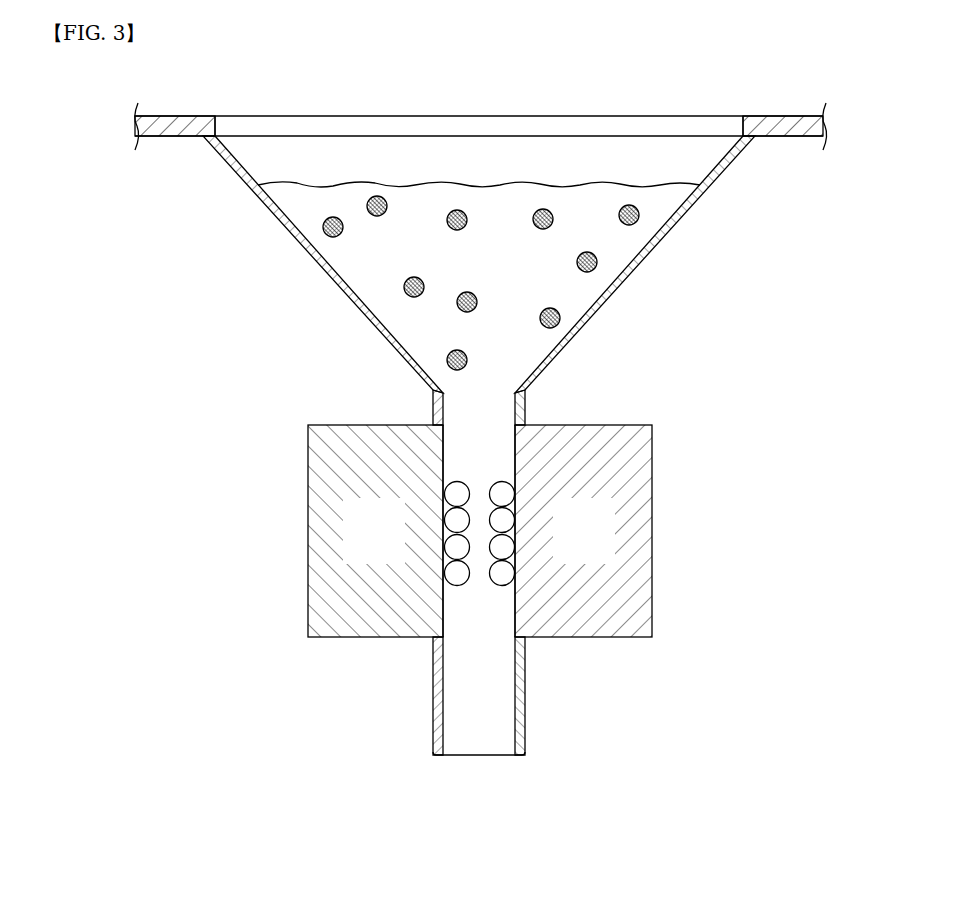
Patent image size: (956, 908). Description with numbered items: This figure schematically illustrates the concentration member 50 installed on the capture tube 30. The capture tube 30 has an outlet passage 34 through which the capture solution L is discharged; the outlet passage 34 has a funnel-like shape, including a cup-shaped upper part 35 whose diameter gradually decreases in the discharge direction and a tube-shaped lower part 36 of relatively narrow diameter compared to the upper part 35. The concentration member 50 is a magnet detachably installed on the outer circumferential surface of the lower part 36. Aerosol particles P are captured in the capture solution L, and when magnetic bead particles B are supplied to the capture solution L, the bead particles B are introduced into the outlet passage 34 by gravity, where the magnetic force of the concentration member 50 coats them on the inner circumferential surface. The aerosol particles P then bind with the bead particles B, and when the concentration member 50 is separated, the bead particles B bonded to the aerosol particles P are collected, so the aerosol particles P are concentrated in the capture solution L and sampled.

The capture tube 30 is at (777, 115).
The outlet passage 34 is at (498, 445).
The upper part 35 is at (655, 262).
The lower part 36 is at (585, 572).
The concentration member 50 is at (547, 590).
The capture solution L is at (365, 263).
The aerosol particles P is at (640, 215).
The magnetic bead particles B is at (453, 495).